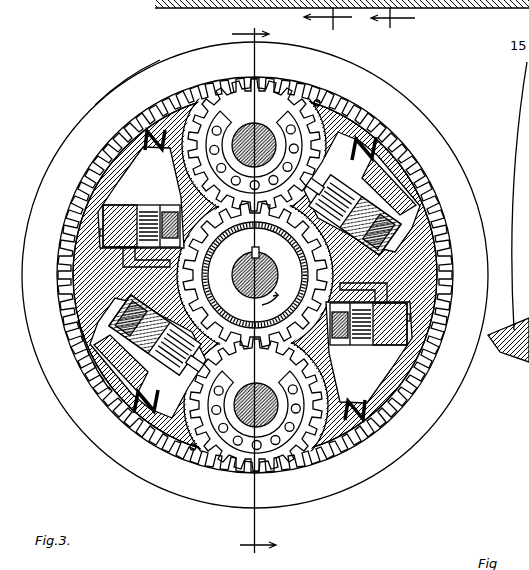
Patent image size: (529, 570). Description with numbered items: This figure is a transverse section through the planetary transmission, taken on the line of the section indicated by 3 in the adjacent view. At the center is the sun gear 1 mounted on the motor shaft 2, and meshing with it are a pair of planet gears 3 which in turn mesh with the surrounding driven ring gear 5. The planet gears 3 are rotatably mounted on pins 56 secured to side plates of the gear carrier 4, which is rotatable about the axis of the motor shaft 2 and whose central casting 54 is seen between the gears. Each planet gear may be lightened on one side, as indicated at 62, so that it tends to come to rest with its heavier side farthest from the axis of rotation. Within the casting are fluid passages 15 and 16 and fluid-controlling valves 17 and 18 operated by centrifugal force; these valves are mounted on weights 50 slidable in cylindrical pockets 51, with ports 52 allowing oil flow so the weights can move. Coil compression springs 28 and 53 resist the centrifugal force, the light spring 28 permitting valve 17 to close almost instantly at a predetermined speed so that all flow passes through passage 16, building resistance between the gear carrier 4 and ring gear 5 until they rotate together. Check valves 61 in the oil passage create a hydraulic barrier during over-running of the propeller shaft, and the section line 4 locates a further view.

The sun gear 1 is at (328, 263).
The motor shaft 2 is at (262, 292).
The planet gears 3 is at (314, 105).
The gear carrier 4 is at (328, 23).
The driven ring gear 5 is at (377, 117).
The fluid passage 15 is at (118, 181).
The fluid passage 16 is at (86, 257).
The fluid-controlling valve 17 is at (128, 262).
The fluid-controlling valve 18 is at (393, 203).
The light spring 28 is at (92, 211).
The weights 50 is at (162, 204).
The cylindrical pockets 51 is at (358, 200).
The ports 52 is at (360, 347).
The coil compression spring 53 is at (87, 345).
The central casting 54 is at (150, 112).
The pins 56 is at (233, 113).
The check valves 61 is at (143, 130).
The lightened side of planet gear 62 is at (300, 123).